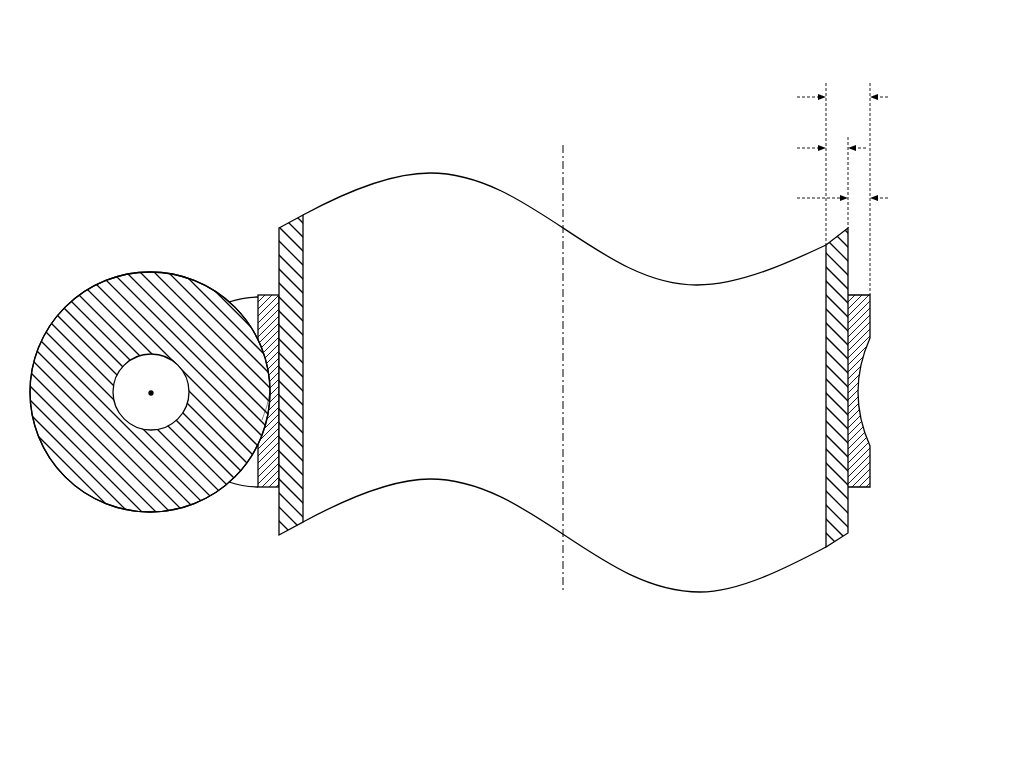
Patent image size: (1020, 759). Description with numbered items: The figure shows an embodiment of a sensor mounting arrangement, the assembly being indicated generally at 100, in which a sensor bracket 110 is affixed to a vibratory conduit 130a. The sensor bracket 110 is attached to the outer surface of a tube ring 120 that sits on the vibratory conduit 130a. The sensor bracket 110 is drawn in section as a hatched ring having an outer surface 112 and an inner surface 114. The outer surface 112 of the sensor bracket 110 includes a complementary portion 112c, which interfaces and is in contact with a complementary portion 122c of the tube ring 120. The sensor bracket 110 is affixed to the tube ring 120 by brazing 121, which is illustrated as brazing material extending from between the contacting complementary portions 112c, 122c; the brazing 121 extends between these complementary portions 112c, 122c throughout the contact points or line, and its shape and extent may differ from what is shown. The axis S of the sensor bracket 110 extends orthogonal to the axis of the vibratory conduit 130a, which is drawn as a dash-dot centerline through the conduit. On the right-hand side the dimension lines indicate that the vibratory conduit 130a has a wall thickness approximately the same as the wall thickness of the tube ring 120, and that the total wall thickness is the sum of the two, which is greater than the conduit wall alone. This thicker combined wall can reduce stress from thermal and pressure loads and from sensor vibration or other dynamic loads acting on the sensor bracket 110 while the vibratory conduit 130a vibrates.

The ball joint assembly 100 is at (160, 44).
The sensor bracket 110 is at (176, 250).
The outer surface 112 is at (96, 282).
The complementary portion 112c is at (285, 392).
The inner surface 114 is at (120, 411).
The axis S is at (151, 393).
The brazing 121 is at (252, 482).
The vibratory conduit 130a is at (291, 524).
The tube ring 120 is at (860, 488).
The complementary portion 122c is at (862, 390).